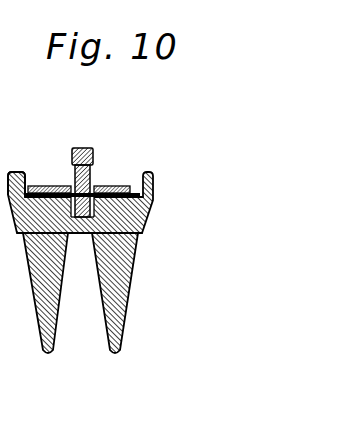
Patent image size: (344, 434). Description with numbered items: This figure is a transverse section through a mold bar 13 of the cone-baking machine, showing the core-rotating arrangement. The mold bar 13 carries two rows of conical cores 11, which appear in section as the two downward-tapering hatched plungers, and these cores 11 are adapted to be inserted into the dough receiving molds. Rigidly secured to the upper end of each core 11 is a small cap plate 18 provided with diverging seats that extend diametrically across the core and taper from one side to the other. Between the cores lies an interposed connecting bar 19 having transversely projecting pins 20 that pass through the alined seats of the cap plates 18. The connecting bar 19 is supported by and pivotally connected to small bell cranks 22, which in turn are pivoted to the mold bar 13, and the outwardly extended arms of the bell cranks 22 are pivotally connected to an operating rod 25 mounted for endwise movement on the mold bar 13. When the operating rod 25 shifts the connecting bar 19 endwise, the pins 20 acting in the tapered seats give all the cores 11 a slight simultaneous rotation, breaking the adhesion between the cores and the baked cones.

The conical core 11 is at (103, 320).
The mold bar 13 is at (147, 213).
The cap plate 18 is at (50, 186).
The connecting bar 19 is at (90, 182).
The pin 20 is at (27, 195).
The bell crank 22 is at (92, 166).
The operating rod 25 is at (85, 148).